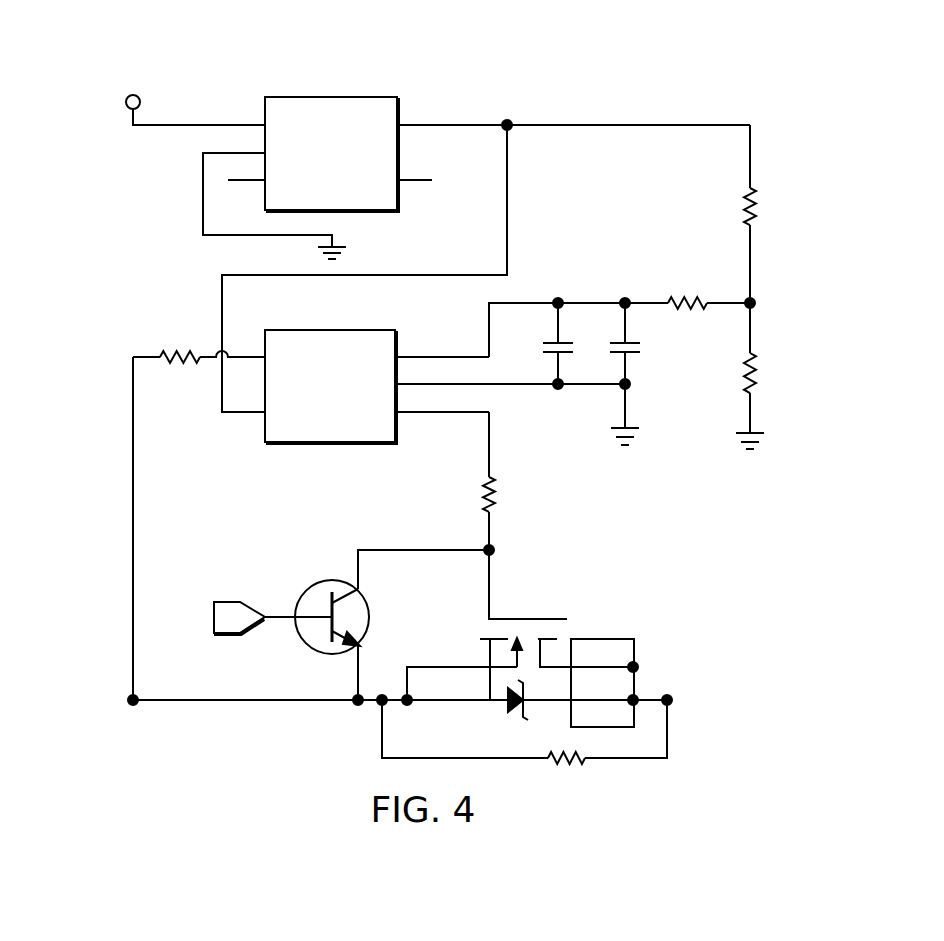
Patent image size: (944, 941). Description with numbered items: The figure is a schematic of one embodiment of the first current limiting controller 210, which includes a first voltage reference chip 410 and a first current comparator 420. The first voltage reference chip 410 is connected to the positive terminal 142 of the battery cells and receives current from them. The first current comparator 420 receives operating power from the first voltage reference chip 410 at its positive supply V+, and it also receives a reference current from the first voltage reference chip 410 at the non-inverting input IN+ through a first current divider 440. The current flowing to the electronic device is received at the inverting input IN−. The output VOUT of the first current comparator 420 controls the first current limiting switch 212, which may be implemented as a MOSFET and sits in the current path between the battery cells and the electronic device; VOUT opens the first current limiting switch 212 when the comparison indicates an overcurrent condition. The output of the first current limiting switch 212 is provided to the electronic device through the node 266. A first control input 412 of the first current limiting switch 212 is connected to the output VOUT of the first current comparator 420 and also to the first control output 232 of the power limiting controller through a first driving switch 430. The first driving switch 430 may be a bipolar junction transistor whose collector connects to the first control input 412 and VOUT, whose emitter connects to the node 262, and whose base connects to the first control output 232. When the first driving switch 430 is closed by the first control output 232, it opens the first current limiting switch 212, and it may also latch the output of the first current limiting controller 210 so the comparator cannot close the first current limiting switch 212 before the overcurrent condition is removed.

The first current limiting controller 210 is at (103, 46).
The positive terminal 142 is at (126, 102).
The first voltage reference chip 410 is at (330, 96).
The first current divider 440 is at (781, 165).
The first current comparator 420 is at (328, 443).
The first control input 412 is at (490, 585).
The first driving switch 430 is at (370, 617).
The first control output 232 is at (213, 617).
The node 262 is at (130, 700).
The first current limiting switch 212 is at (636, 648).
The node 266 is at (672, 700).